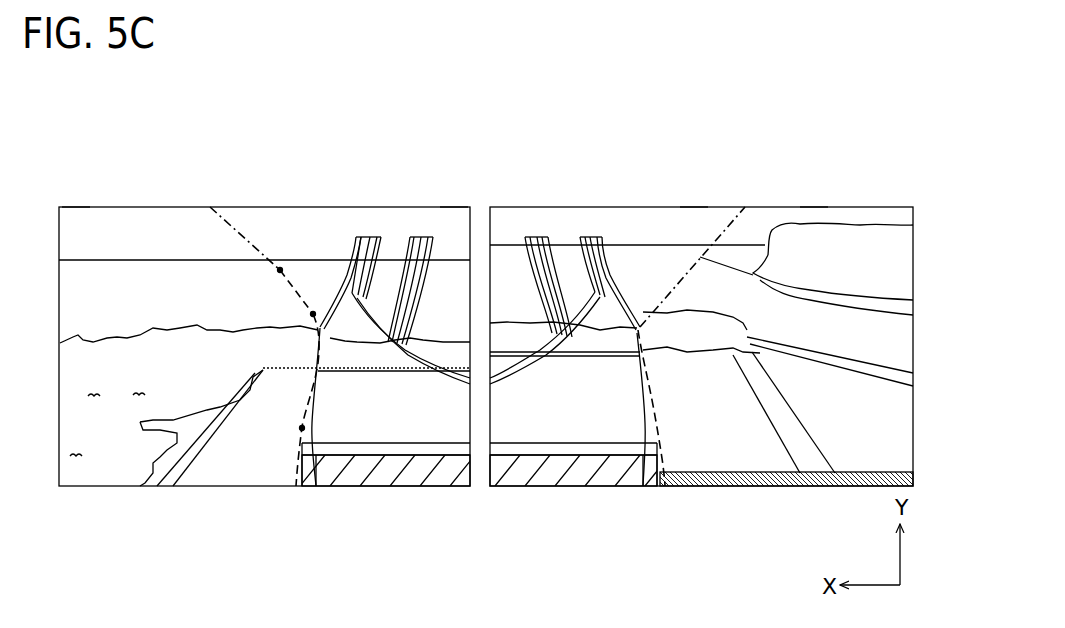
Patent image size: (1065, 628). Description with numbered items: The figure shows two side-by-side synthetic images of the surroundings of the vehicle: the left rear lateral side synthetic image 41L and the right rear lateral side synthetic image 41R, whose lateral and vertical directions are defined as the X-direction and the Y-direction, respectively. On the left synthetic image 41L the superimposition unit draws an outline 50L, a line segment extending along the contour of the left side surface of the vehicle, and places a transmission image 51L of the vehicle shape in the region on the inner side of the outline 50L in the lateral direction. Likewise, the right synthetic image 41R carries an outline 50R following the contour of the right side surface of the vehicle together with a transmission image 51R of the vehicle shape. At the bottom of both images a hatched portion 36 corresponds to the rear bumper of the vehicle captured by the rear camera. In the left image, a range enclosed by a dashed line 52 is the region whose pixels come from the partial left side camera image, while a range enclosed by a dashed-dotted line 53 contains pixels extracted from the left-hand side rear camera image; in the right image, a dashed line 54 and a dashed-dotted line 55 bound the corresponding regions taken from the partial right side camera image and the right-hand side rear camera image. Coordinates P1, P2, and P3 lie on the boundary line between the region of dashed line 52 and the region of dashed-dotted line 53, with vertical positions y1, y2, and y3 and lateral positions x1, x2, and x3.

The left rear lateral side synthetic image 41L is at (267, 277).
The right rear lateral side synthetic image 41R is at (694, 284).
The rear bumper portion 36 is at (392, 450).
The outline 50L is at (354, 256).
The transmission image 51L is at (408, 245).
The outline 50R is at (602, 243).
The transmission image 51R is at (549, 238).
The dashed line 52 is at (75, 205).
The dashed-dotted line 53 is at (450, 207).
The dashed line 54 is at (813, 207).
The dashed-dotted line 55 is at (693, 207).
The coordinate P1 is at (280, 269).
The coordinate P2 is at (313, 313).
The coordinate P3 is at (302, 428).